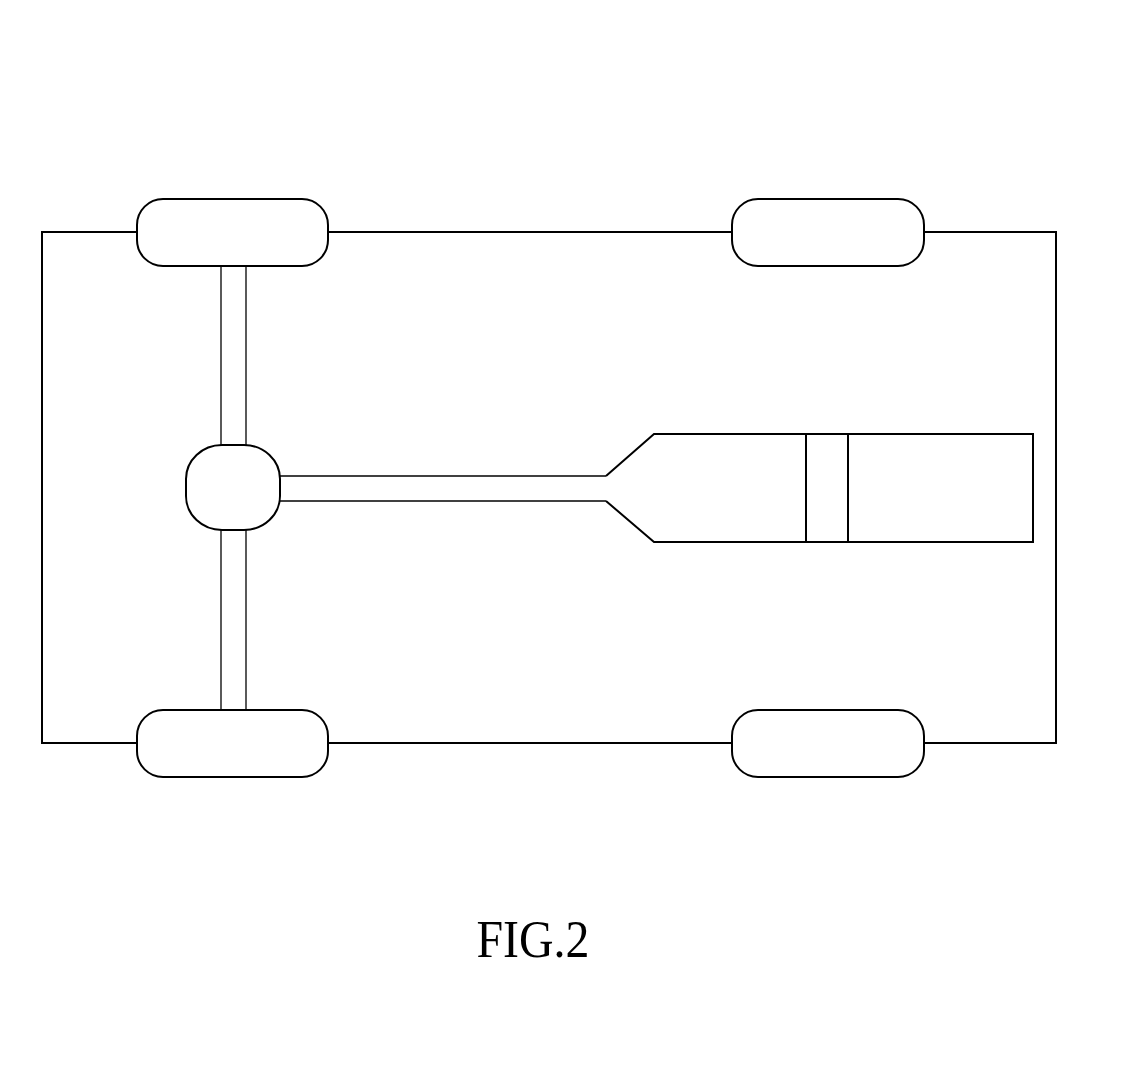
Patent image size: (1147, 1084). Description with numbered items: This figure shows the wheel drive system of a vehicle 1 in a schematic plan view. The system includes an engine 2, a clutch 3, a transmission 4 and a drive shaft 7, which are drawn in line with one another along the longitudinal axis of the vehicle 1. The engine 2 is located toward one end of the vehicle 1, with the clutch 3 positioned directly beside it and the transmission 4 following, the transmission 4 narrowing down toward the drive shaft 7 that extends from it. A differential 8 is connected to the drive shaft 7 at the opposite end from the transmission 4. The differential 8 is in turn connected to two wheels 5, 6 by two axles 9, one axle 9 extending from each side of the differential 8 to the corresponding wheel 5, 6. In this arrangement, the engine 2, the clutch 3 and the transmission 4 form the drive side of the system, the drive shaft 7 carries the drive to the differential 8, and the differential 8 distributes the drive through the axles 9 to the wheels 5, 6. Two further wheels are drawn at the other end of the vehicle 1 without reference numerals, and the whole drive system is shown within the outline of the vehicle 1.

The vehicle 1 is at (1083, 128).
The engine 2 is at (937, 445).
The clutch 3 is at (823, 445).
The transmission 4 is at (706, 445).
The wheel 5 is at (258, 772).
The wheel 6 is at (258, 204).
The drive shaft 7 is at (472, 487).
The differential 8 is at (201, 491).
The axles 9 is at (228, 383).